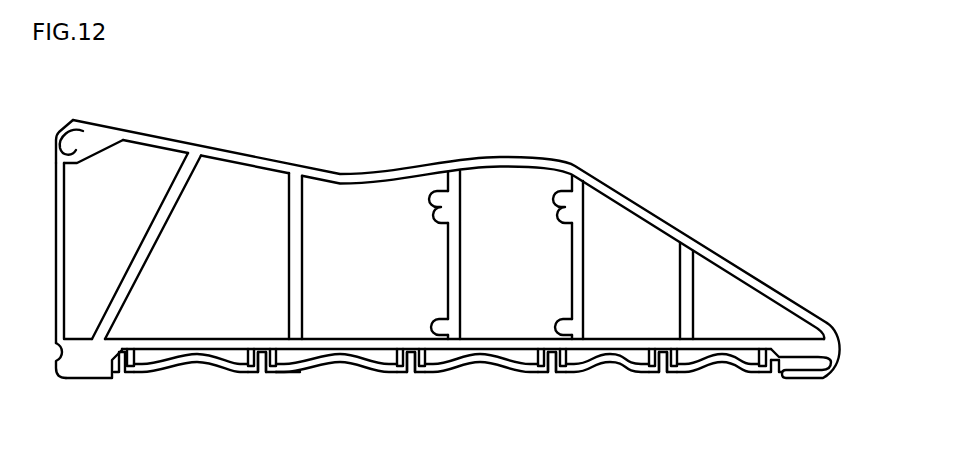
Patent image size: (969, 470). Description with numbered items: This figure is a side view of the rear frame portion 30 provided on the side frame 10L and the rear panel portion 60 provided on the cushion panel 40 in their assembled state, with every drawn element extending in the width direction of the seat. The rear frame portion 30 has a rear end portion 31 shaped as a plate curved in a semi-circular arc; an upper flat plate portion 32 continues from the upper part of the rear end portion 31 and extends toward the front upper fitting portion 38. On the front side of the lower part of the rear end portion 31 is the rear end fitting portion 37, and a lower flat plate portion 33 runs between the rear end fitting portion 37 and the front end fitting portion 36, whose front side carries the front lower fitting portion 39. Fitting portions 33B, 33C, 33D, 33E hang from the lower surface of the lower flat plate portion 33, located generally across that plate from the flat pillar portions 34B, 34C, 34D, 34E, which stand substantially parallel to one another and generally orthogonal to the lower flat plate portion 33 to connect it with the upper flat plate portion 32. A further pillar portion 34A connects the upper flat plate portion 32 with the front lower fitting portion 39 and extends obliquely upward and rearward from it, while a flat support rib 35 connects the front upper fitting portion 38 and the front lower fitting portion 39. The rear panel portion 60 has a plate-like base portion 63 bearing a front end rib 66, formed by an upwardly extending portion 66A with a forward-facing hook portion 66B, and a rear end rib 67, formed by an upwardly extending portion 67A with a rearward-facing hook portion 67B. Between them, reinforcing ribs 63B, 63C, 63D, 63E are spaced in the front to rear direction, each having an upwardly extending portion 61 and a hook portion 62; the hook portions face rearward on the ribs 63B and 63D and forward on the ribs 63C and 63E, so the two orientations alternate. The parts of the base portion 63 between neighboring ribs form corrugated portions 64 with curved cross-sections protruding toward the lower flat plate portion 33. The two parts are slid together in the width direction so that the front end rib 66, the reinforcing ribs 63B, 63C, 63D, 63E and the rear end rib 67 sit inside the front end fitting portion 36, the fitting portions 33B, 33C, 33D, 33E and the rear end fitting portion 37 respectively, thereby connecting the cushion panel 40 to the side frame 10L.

The side frame 10L is at (440, 267).
The rear frame portion 30 is at (440, 267).
The rear end portion 31 is at (838, 332).
The upper flat plate portion 32 is at (402, 170).
The lower flat plate portion 33 is at (331, 338).
The fitting portion 33B is at (278, 350).
The fitting portion 33C is at (418, 350).
The fitting portion 33D is at (570, 358).
The fitting portion 33E is at (661, 358).
The pillar portion 34A is at (151, 240).
The pillar portion 34B is at (292, 230).
The pillar portion 34C is at (442, 259).
The pillar portion 34D is at (568, 260).
The pillar portion 34E is at (684, 289).
The support rib 35 is at (66, 237).
The front end fitting portion 36 is at (118, 376).
The rear end fitting portion 37 is at (800, 379).
The front upper fitting portion 38 is at (80, 152).
The front lower fitting portion 39 is at (49, 365).
The cushion panel 40 is at (459, 409).
The rear panel portion 60 is at (459, 409).
The upwardly extending portion 61 is at (266, 374).
The hook portion 62 is at (257, 374).
The base portion 63 is at (299, 374).
The reinforcing rib 63B is at (218, 413).
The reinforcing rib 63C is at (403, 413).
The reinforcing rib 63D is at (568, 413).
The reinforcing rib 63E is at (656, 413).
The corrugated portion 64 is at (200, 365).
The front end rib 66 is at (157, 395).
The upwardly extending portion 66A is at (120, 374).
The hook portion 66B is at (117, 413).
The rear end rib 67 is at (765, 401).
The upwardly extending portion 67A is at (785, 387).
The hook portion 67B is at (771, 374).